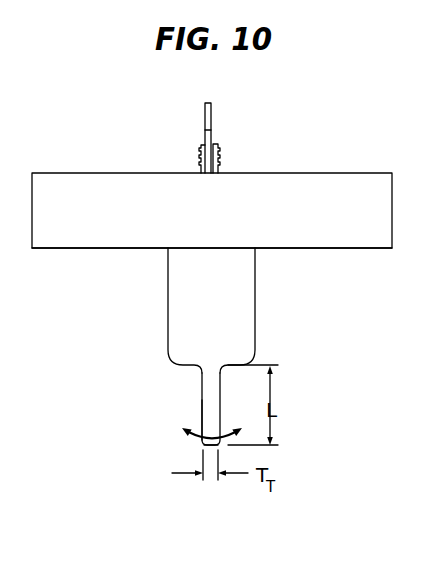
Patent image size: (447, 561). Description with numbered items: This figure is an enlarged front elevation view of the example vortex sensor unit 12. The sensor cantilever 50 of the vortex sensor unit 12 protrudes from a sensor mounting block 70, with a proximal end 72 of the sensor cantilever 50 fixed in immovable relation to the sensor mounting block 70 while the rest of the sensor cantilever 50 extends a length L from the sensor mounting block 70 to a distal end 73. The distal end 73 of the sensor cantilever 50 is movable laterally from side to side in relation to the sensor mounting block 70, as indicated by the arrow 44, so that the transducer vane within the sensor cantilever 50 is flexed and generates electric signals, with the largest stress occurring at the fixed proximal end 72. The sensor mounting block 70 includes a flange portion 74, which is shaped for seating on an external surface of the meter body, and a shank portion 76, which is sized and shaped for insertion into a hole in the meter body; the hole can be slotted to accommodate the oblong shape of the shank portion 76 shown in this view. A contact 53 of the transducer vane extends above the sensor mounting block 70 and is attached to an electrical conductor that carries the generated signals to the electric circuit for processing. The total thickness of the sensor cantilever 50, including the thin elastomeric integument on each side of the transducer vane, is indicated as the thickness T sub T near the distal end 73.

The vortex sensor unit 12 is at (152, 126).
The sensor mounting block 70 is at (90, 163).
The flange portion 74 is at (62, 248).
The contact 53 is at (214, 144).
The shank portion 76 is at (168, 298).
The proximal end 72 is at (199, 368).
The sensor cantilever 50 is at (192, 410).
The arrow 44 is at (198, 434).
The distal end 73 is at (200, 447).